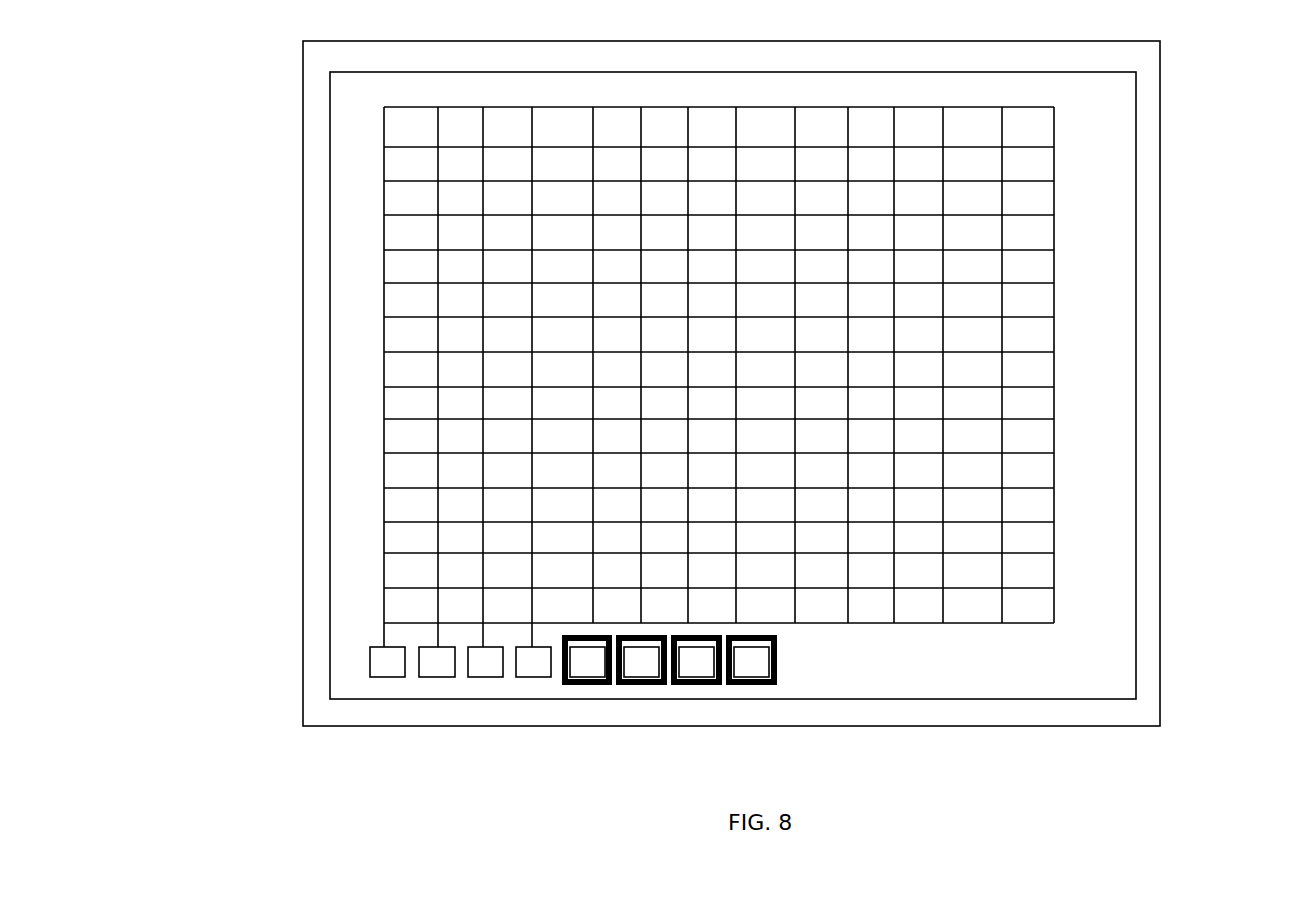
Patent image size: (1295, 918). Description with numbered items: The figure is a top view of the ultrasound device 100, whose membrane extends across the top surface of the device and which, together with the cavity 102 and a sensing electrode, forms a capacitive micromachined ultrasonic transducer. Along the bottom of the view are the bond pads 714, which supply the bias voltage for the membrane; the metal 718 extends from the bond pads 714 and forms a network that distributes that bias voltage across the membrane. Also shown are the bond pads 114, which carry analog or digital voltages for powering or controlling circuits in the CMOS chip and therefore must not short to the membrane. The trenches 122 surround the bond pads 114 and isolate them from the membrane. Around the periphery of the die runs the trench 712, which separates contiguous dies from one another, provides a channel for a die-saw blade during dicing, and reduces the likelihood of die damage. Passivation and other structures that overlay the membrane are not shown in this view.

The ultrasound device 100 is at (267, 112).
The trench 712 is at (1148, 293).
The cavity 102 is at (978, 660).
The metal 718 is at (385, 503).
The bond pads 714 is at (393, 670).
The trenches 122 is at (613, 688).
The bond pads 114 is at (589, 660).